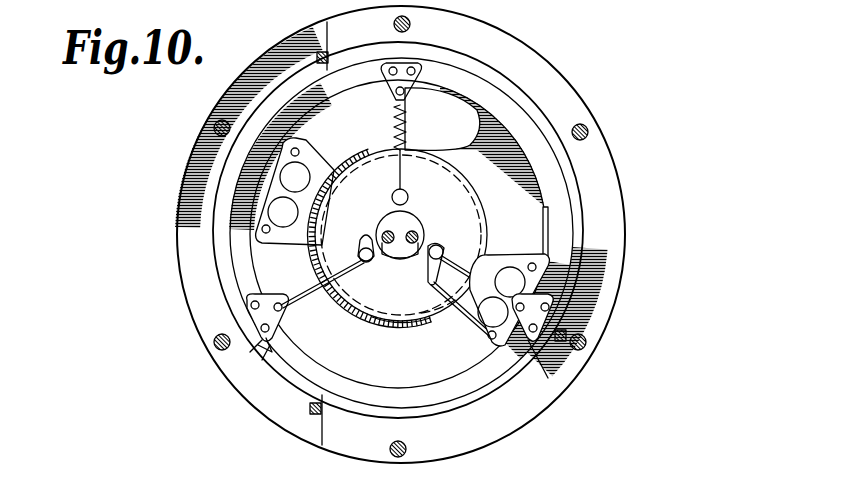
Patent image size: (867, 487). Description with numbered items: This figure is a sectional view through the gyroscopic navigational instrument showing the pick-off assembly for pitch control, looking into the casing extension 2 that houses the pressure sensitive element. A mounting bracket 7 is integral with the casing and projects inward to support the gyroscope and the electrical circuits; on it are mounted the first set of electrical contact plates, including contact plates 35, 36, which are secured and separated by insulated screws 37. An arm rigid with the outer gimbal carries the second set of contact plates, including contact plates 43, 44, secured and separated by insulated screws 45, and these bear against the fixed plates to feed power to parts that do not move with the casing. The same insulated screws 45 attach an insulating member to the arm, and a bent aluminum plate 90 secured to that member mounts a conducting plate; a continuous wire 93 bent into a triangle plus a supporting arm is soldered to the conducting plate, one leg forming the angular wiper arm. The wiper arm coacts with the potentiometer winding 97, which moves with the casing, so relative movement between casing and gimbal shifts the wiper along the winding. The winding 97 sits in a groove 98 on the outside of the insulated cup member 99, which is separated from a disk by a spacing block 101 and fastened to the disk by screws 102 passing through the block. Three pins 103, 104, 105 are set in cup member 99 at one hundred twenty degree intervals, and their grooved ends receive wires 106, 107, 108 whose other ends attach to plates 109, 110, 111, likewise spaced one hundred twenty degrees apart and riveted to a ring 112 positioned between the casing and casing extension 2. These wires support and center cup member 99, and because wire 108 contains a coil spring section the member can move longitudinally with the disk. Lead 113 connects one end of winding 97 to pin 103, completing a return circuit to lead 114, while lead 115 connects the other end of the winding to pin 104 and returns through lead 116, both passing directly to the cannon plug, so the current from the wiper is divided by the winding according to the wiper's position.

The extension 2 is at (508, 66).
The ring 112 is at (510, 104).
The wire 106 is at (550, 160).
The mounting bracket 7 is at (580, 186).
The plate 111 is at (408, 96).
The wire 108 is at (401, 172).
The pin 105 is at (408, 197).
The contact plate 43 is at (300, 152).
The contact plate 44 is at (303, 170).
The insulated screws 45 is at (295, 217).
The lead 113 is at (318, 198).
The groove 98 is at (470, 188).
The insulated cup member 99 is at (478, 202).
The bent aluminum plate 90 is at (306, 264).
The continuous wire 93 is at (338, 316).
The potentiometer winding 97 is at (397, 332).
The lead 115 is at (424, 290).
The spacing block 101 is at (421, 228).
The screws 102 is at (389, 246).
The pin 103 is at (366, 264).
The pin 104 is at (440, 254).
The wire 107 is at (452, 314).
The contact plate 35 is at (510, 257).
The contact plate 36 is at (490, 255).
The insulated screws 37 is at (476, 330).
The plate 110 is at (540, 318).
The lead 116 is at (550, 360).
The plate 109 is at (262, 342).
The lead 114 is at (268, 350).